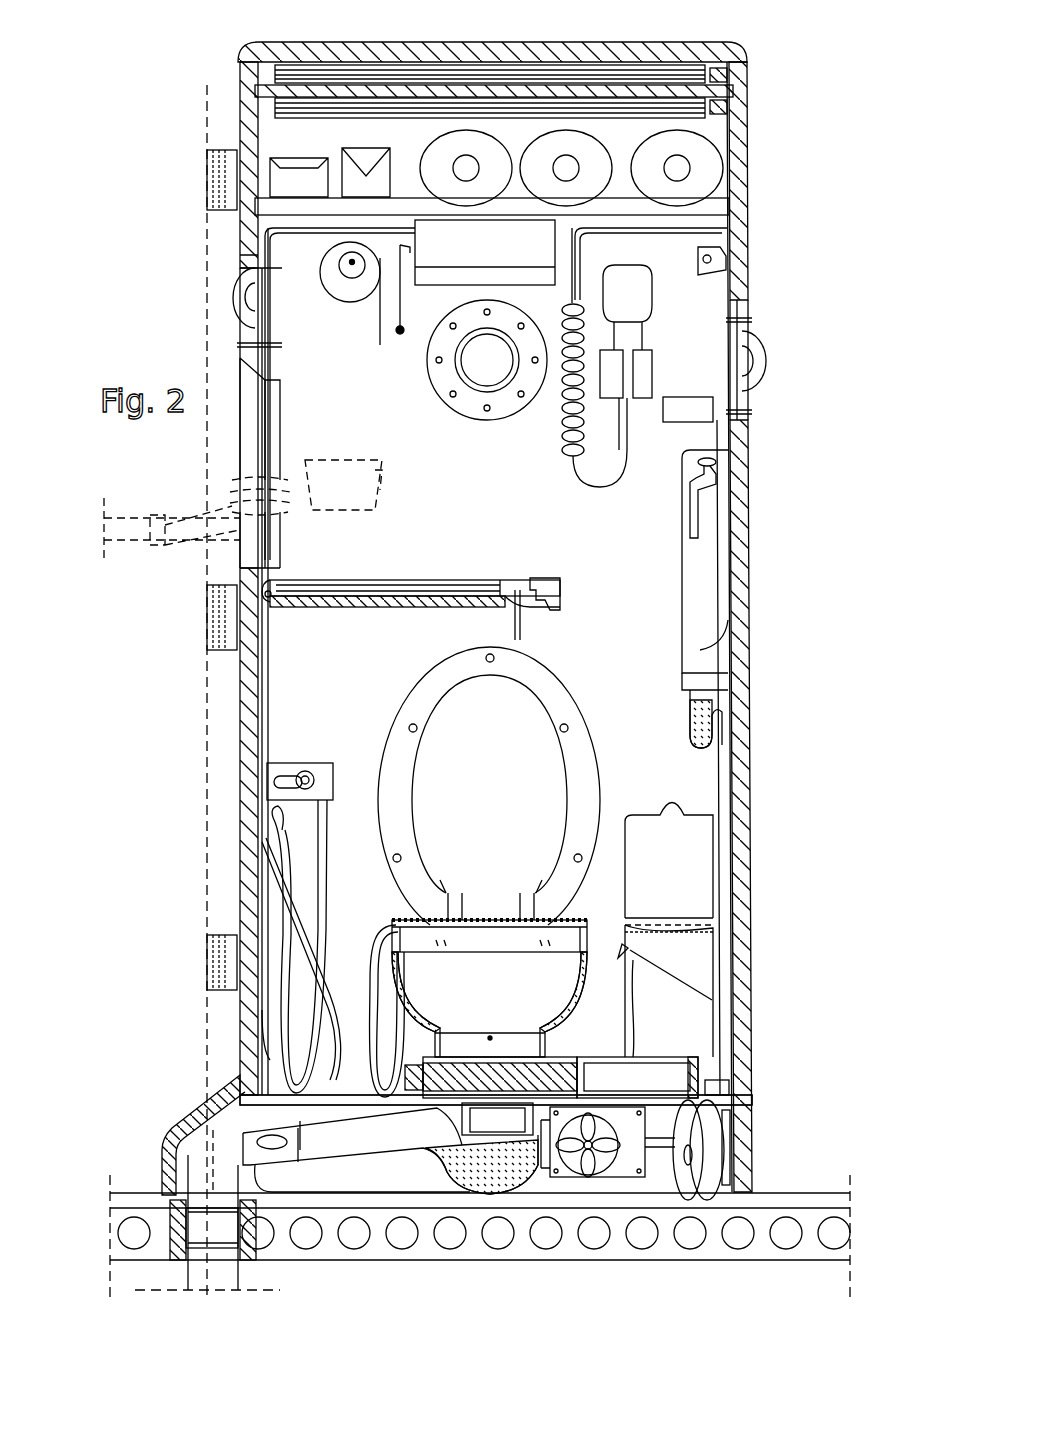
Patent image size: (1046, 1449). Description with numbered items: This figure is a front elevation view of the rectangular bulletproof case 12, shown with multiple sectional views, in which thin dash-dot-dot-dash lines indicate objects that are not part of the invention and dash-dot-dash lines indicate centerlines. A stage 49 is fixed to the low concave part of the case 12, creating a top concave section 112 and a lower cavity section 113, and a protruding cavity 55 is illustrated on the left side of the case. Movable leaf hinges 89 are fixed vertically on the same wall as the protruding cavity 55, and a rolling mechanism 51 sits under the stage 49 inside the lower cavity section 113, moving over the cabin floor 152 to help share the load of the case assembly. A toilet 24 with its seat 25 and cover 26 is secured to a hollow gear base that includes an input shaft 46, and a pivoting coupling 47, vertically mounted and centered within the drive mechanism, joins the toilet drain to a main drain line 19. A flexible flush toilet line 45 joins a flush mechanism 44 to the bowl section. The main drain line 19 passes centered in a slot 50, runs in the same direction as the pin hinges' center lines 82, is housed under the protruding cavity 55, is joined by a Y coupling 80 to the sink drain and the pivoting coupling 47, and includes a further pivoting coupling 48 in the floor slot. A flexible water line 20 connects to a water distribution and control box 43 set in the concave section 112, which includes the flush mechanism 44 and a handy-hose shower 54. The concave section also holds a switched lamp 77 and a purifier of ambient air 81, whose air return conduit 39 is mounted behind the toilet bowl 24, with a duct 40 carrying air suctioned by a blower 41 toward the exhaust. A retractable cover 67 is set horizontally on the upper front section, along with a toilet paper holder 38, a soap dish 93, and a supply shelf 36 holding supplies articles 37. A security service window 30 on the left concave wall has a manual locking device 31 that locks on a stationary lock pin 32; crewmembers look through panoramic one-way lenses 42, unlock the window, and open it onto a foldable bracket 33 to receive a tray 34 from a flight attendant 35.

The bulletproof case 12 is at (752, 722).
The main drain line 19 is at (226, 1262).
The flexible water line 20 is at (262, 1092).
The toilet 24 is at (434, 1001).
The seat 25 is at (553, 702).
The cover 26 is at (474, 820).
The security service window 30 is at (488, 570).
The manual locking device 31 is at (555, 602).
The stationary lock pin 32 is at (270, 352).
The foldable bracket 33 is at (510, 628).
The tray 34 is at (380, 512).
The flight attendant 35 is at (145, 560).
The supply shelf 36 is at (722, 206).
The supplies articles 37 is at (712, 155).
The toilet paper holder 38 is at (350, 274).
The air return conduit 39 is at (400, 920).
The duct 40 is at (575, 1048).
The blower 41 is at (575, 1162).
The panoramic one-way lenses 42 is at (482, 372).
The water distribution and control box 43 is at (270, 779).
The flush mechanism 44 is at (300, 775).
The flexible flush toilet line 45 is at (360, 1085).
The input shaft 46 is at (507, 1067).
The pivoting coupling 47 is at (498, 1117).
The pivoting coupling 48 is at (212, 1224).
The stage 49 is at (730, 1078).
The slot 50 is at (252, 1240).
The rolling mechanism 51 is at (686, 1190).
The handy-hose shower 54 is at (262, 860).
The protruding cavity 55 is at (172, 1130).
The retractable cover 67 is at (668, 72).
The switched lamp 77 is at (475, 258).
The "Y" coupling 80 is at (290, 1143).
The purifier of ambient air 81 is at (632, 1150).
The pin hinges' center lines 82 is at (205, 122).
The movable leaf hinges 89 is at (212, 960).
The soap dish 93 is at (705, 410).
The top concave section 112 is at (632, 540).
The lower cavity section 113 is at (376, 1160).
The cabin floor 152 is at (780, 1200).